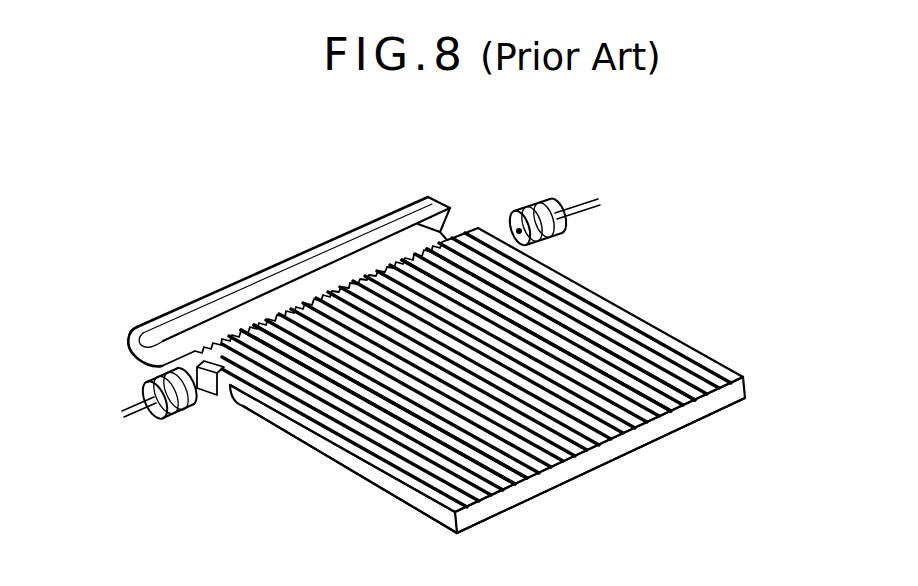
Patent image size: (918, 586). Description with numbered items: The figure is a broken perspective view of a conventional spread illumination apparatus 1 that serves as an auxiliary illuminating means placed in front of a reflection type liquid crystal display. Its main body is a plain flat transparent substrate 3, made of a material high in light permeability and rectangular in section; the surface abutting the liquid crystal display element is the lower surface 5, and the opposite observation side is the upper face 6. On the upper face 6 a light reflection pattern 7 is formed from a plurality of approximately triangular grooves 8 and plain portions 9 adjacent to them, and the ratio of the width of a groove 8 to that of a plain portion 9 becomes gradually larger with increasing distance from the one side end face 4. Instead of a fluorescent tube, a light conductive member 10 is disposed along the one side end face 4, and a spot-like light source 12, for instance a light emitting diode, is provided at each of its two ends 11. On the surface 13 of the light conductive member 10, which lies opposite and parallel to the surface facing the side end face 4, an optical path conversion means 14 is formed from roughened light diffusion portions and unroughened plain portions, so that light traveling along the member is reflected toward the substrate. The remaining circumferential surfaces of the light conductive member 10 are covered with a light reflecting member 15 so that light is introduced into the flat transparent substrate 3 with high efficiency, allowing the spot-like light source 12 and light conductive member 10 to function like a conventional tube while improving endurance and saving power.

The spread illumination apparatus 1 is at (692, 455).
The flat transparent substrate 3 is at (432, 505).
The one side end face 4 is at (240, 397).
The lower surface 5 is at (340, 473).
The upper face 6 is at (745, 376).
The light reflection pattern 7 is at (677, 244).
The grooves 8 is at (682, 347).
The plain portions 9 is at (716, 362).
The light conductive member 10 is at (283, 343).
The ends 11 is at (200, 389).
The spot-like light source 12 is at (145, 386).
The surface 13 is at (470, 229).
The optical path conversion means 14 is at (357, 283).
The light reflecting member 15 is at (200, 308).